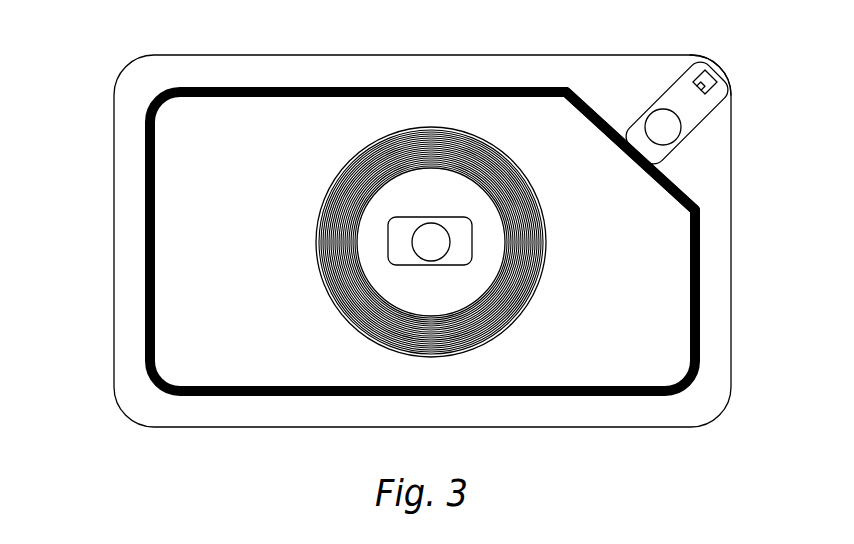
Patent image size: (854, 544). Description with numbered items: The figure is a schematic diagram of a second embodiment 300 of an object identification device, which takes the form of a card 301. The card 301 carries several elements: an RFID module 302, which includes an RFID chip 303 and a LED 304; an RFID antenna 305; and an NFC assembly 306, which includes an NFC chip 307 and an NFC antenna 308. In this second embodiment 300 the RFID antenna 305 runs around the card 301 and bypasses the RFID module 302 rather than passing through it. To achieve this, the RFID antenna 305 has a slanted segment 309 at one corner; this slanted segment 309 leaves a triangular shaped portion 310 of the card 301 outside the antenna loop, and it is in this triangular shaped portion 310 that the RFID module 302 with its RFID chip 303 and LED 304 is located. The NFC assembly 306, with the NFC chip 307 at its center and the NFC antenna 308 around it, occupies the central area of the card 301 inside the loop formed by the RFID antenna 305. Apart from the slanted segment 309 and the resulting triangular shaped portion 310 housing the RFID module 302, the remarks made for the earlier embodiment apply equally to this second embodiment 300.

The second embodiment of object identification device 300 is at (414, 242).
The card 301 is at (130, 158).
The RFID module 302 is at (711, 126).
The RFID chip 303 is at (667, 133).
The LED 304 is at (717, 82).
The RFID antenna 305 is at (700, 297).
The NFC assembly 306 is at (289, 296).
The NFC chip 307 is at (427, 243).
The NFC antenna 308 is at (330, 273).
The slanted segment 309 is at (594, 100).
The triangular shaped portion 310 is at (632, 80).